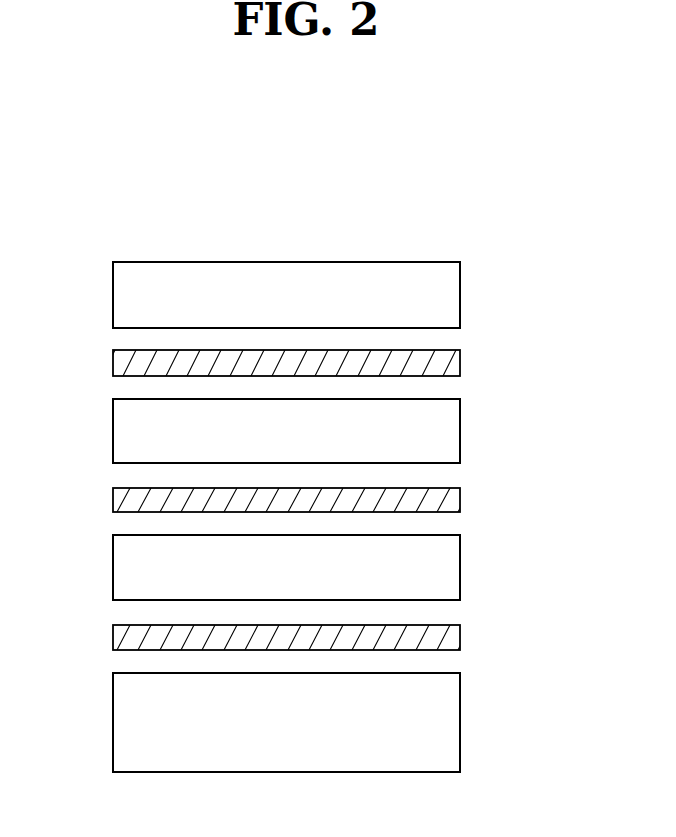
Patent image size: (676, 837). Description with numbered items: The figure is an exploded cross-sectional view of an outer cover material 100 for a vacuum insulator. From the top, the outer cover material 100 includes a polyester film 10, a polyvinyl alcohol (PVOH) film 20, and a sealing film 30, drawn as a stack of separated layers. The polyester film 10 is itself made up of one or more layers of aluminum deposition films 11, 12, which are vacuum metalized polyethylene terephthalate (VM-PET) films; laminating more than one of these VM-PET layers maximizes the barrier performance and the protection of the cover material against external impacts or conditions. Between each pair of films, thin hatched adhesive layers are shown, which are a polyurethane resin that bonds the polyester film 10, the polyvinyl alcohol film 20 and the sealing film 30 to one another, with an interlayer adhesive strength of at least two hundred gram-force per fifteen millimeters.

The outer cover material 100 is at (402, 241).
The polyester film 10 is at (517, 292).
The aluminum deposition film 11 is at (443, 292).
The aluminum deposition film 12 is at (445, 428).
The polyvinyl alcohol film 20 is at (444, 572).
The sealing film 30 is at (445, 723).